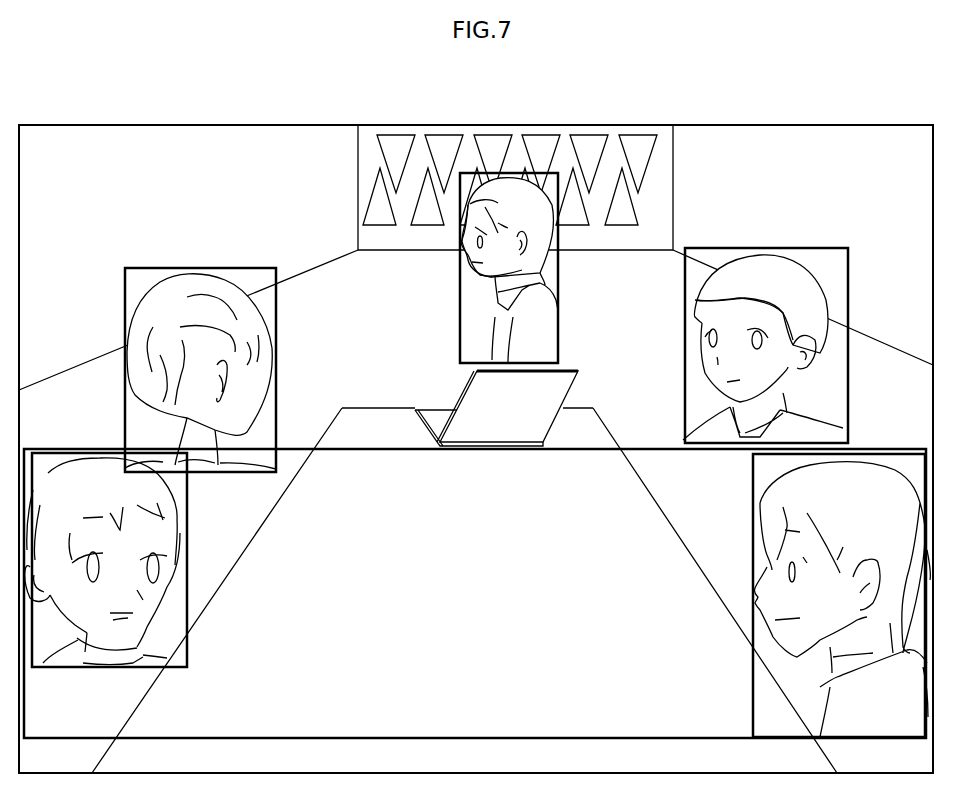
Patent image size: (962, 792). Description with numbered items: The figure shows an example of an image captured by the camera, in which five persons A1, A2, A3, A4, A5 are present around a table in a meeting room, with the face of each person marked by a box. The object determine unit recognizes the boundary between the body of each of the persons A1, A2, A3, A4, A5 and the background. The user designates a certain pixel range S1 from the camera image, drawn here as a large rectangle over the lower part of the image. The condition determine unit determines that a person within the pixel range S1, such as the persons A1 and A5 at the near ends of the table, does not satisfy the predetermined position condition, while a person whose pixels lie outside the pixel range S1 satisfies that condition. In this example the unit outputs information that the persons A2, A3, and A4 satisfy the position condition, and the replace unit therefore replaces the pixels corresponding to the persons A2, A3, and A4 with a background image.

The person A1 is at (190, 557).
The person A2 is at (246, 267).
The person A3 is at (541, 177).
The person A4 is at (792, 248).
The person A5 is at (880, 457).
The pixel range S1 is at (602, 457).